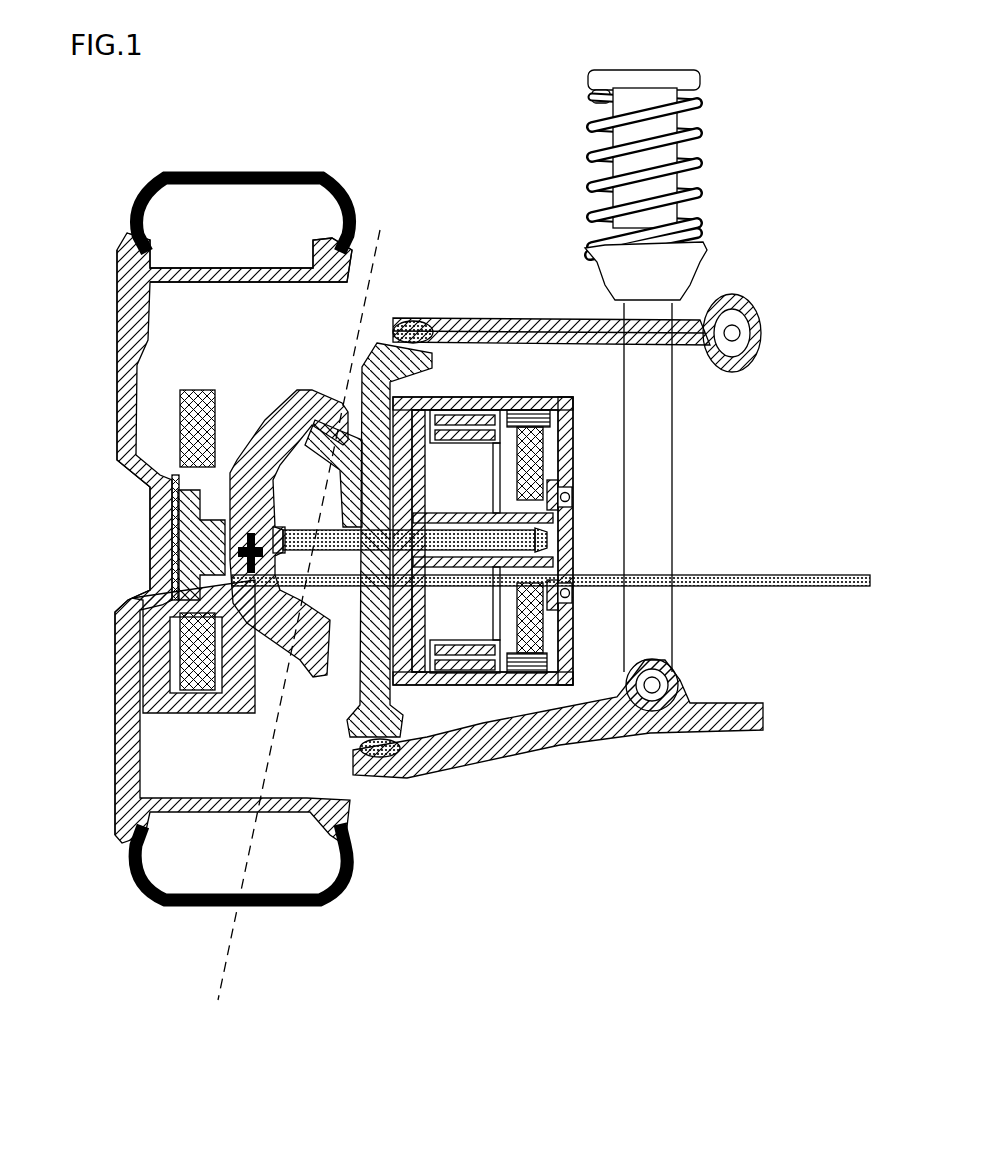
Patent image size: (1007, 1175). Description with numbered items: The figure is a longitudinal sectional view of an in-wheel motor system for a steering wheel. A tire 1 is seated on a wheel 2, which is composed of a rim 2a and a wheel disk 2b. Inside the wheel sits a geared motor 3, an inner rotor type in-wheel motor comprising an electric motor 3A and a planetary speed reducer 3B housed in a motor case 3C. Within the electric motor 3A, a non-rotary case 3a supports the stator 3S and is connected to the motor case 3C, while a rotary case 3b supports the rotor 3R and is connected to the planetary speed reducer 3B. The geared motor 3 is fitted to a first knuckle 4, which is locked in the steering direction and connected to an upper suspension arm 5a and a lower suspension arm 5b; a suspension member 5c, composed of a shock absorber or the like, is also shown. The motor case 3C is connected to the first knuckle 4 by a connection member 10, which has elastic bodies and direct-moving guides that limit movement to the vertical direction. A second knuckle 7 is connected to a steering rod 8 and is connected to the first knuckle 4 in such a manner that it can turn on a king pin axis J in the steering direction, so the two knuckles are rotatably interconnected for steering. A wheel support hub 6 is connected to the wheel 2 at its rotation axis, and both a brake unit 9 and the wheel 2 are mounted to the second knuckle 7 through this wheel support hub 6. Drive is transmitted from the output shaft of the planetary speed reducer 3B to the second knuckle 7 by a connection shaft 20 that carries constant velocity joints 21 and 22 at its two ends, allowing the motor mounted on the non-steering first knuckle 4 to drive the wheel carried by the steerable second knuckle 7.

The tire 1 is at (314, 178).
The wheel 2 is at (117, 328).
The rim 2a is at (127, 246).
The wheel disk 2b is at (118, 412).
The geared motor 3 is at (507, 392).
The electric motor 3A is at (520, 400).
The planetary speed reducer 3B is at (573, 637).
The motor case 3C is at (573, 420).
The stator 3S is at (455, 412).
The non-rotary case 3a is at (492, 412).
The rotor 3R is at (467, 660).
The rotary case 3b is at (518, 680).
The first knuckle 4 is at (362, 368).
The upper suspension arm 5a is at (747, 303).
The lower suspension arm 5b is at (713, 707).
The suspension member 5c is at (697, 240).
The wheel support hub 6 is at (173, 520).
The second knuckle 7 is at (294, 412).
The steering rod 8 is at (703, 577).
The brake unit 9 is at (140, 578).
The connection member 10 is at (380, 672).
The connection shaft 20 is at (450, 530).
The constant velocity joint 21 is at (573, 527).
The constant velocity joint 22 is at (292, 510).
The king pin axis J is at (310, 592).